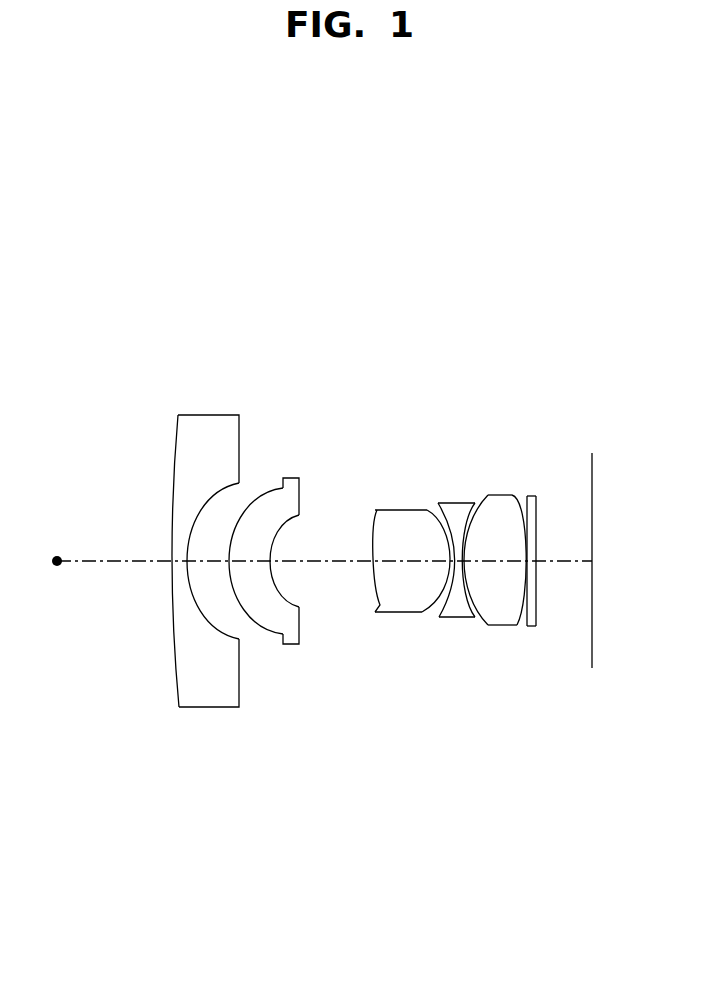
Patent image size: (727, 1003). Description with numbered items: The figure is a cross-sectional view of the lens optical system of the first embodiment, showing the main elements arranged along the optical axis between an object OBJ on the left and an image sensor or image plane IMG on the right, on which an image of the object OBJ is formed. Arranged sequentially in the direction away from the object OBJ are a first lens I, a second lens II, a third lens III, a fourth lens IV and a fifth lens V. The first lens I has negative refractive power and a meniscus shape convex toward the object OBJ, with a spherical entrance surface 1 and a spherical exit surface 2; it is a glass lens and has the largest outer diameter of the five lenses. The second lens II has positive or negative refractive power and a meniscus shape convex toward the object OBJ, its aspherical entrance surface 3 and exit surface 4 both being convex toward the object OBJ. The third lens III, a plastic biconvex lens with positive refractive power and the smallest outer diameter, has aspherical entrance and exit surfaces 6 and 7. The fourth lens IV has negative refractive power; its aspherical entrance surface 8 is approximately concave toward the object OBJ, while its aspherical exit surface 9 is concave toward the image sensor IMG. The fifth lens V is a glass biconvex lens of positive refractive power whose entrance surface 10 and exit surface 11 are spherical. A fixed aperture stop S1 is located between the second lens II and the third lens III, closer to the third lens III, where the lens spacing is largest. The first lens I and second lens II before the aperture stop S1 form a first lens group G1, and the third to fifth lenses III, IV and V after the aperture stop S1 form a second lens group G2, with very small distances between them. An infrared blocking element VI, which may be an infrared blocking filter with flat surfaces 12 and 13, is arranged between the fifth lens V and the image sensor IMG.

The entrance surface of the first lens 1 is at (173, 474).
The exit surface of the first lens 2 is at (225, 487).
The entrance surface of the second lens 3 is at (282, 487).
The exit surface of the second lens 4 is at (287, 517).
The entrance surface of the third lens 6 is at (393, 509).
The exit surface of the third lens 7 is at (413, 509).
The entrance surface of the fourth lens 8 is at (452, 507).
The exit surface of the fourth lens 9 is at (470, 507).
The entrance surface of the fifth lens 10 is at (497, 497).
The exit surface of the fifth lens 11 is at (510, 496).
The entrance surface of the infrared blocking element 12 is at (523, 498).
The exit surface of the infrared blocking element 13 is at (537, 500).
The aperture stop S1 is at (373, 533).
The object OBJ is at (57, 556).
The image sensor (image plane) IMG is at (594, 474).
The first lens I is at (185, 575).
The second lens II is at (282, 607).
The third lens III is at (411, 564).
The fourth lens IV is at (460, 582).
The fifth lens V is at (498, 561).
The infrared blocking element VI is at (549, 577).
The first lens group G1 is at (234, 600).
The second lens group G2 is at (453, 585).